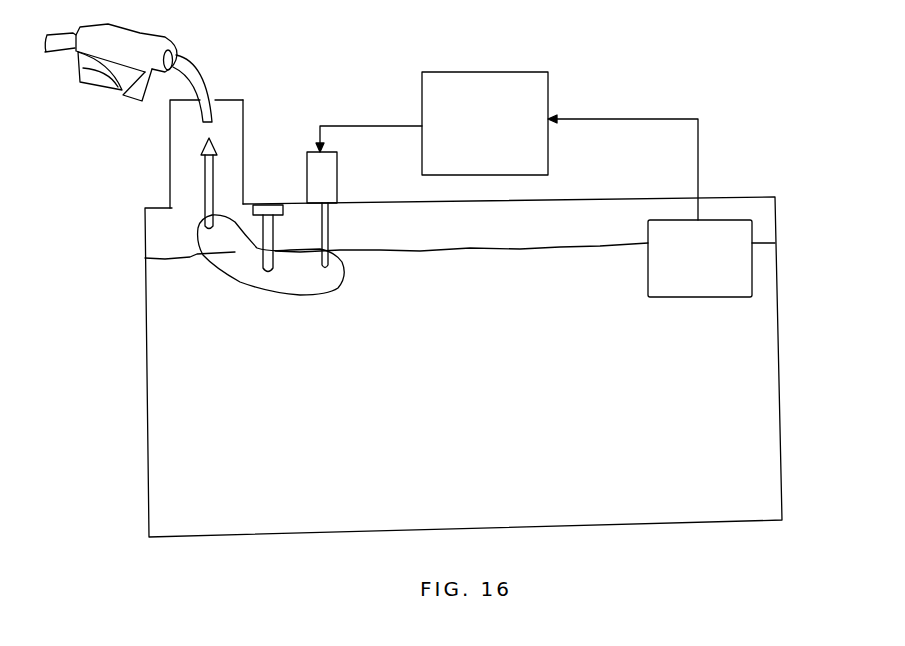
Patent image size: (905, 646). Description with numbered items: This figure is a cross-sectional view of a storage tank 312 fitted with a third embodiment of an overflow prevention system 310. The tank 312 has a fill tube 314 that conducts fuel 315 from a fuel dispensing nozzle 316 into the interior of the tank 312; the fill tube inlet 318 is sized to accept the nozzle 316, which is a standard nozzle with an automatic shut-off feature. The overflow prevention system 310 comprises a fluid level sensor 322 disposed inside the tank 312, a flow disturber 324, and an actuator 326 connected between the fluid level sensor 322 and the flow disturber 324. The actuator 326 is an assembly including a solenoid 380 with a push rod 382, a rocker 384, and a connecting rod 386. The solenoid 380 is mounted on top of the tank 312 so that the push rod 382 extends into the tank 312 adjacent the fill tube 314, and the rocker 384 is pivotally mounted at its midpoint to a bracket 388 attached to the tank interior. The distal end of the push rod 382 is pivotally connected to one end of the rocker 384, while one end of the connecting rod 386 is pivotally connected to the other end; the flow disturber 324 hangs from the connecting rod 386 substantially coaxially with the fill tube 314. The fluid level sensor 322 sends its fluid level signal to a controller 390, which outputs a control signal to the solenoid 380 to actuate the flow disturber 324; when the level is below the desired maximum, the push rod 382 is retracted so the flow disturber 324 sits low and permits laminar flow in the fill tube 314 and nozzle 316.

The overflow prevention system 310 is at (608, 99).
The storage tank 312 is at (778, 373).
The fill tube 314 is at (244, 148).
The fuel 315 is at (481, 246).
The fuel dispensing nozzle 316 is at (142, 42).
The fill tube inlet 318 is at (231, 100).
The fluid level sensor 322 is at (732, 220).
The flow disturber 324 is at (202, 140).
The actuator 326 is at (301, 270).
The solenoid 380 is at (338, 186).
The push rod 382 is at (332, 240).
The rocker 384 is at (308, 292).
The connecting rod 386 is at (205, 183).
The bracket 388 is at (273, 246).
The controller 390 is at (498, 72).